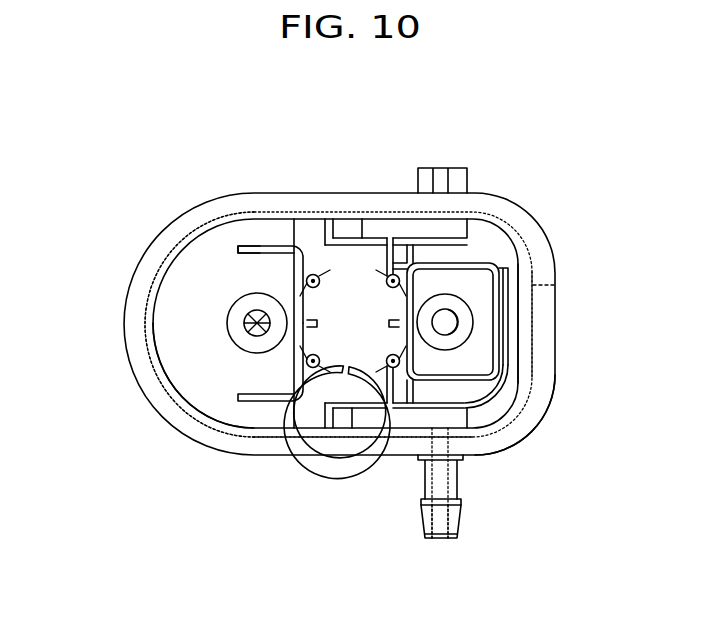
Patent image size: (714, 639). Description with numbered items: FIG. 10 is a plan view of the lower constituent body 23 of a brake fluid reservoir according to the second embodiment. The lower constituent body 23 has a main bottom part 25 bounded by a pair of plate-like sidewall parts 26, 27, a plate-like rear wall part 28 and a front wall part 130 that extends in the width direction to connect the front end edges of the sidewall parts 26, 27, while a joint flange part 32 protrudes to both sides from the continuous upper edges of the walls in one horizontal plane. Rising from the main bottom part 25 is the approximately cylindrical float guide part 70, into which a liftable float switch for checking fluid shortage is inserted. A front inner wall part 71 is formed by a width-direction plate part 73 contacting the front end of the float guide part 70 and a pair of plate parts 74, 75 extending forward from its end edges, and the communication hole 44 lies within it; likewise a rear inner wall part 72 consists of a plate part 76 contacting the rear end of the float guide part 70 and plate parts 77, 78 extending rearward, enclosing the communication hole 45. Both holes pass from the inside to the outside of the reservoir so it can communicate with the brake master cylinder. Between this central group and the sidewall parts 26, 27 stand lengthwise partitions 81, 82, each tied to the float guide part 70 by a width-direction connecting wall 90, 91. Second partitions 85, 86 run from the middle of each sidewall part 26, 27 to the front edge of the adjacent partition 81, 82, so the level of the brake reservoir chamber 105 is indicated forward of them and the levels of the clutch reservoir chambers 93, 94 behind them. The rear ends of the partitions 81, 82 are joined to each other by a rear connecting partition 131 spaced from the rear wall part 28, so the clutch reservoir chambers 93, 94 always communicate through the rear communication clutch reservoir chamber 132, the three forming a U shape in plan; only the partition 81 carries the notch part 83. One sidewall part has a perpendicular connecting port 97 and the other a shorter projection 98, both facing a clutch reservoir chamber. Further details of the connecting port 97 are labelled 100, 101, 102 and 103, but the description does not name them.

The lower constituent body 23 is at (553, 223).
The main bottom part 25 is at (460, 410).
The sidewall part 26 is at (318, 437).
The sidewall part 27 is at (318, 208).
The rear wall part 28 is at (553, 284).
The joint flange part 32 is at (163, 410).
The communication hole 44 is at (250, 320).
The communication hole 45 is at (450, 312).
The float guide part 70 is at (365, 376).
The front inner wall part 71 is at (257, 246).
The rear inner wall part 72 is at (482, 254).
The plate part 73 is at (262, 367).
The plate part 74 is at (247, 401).
The plate part 75 is at (240, 246).
The plate part 76 is at (415, 348).
The plate part 77 is at (455, 398).
The plate part 78 is at (460, 258).
The partition 81 is at (394, 390).
The partition 82 is at (403, 240).
The notch part 83 is at (355, 240).
The partition 85 is at (323, 408).
The partition 86 is at (323, 236).
The connecting wall 90 is at (395, 385).
The connecting wall 91 is at (390, 262).
The clutch reservoir chamber 93 is at (345, 420).
The clutch reservoir chamber 94 is at (345, 226).
The connecting port 97 is at (459, 530).
The projection 98 is at (443, 178).
The nozzle neck 100 is at (465, 461).
The nozzle collar 101 is at (460, 492).
The flow passage 102 is at (440, 523).
The outlet axis 103 is at (440, 538).
The brake reservoir chamber 105 is at (217, 400).
The front wall part 130 is at (143, 330).
The rear connecting partition 131 is at (505, 343).
The rear communication clutch reservoir chamber 132 is at (517, 365).